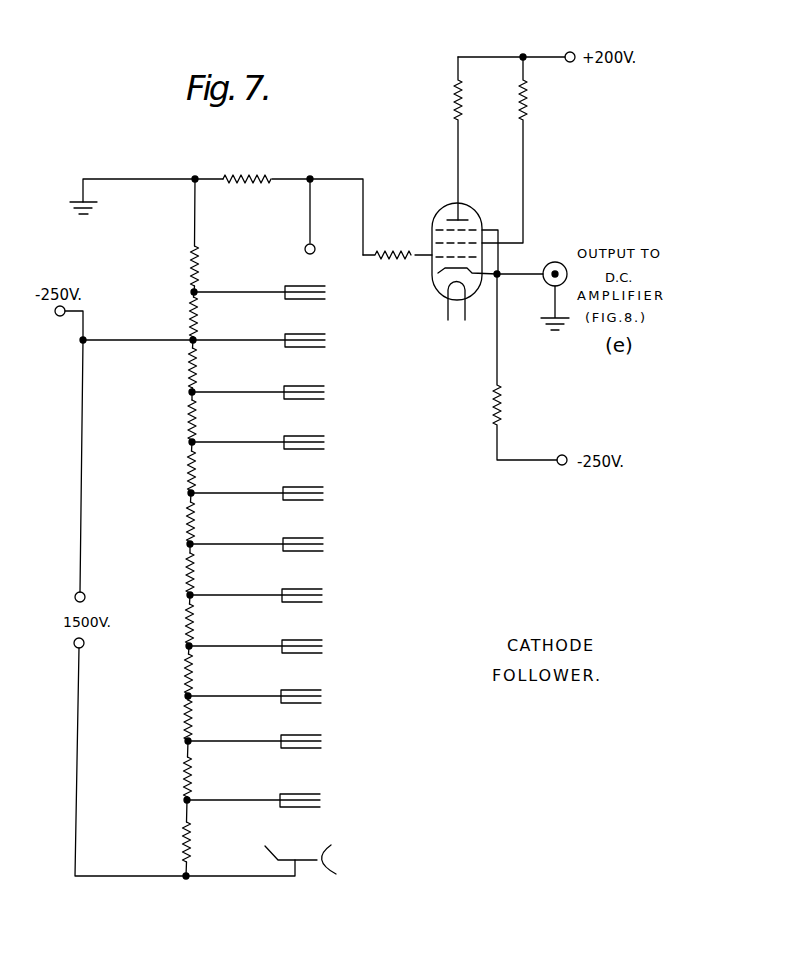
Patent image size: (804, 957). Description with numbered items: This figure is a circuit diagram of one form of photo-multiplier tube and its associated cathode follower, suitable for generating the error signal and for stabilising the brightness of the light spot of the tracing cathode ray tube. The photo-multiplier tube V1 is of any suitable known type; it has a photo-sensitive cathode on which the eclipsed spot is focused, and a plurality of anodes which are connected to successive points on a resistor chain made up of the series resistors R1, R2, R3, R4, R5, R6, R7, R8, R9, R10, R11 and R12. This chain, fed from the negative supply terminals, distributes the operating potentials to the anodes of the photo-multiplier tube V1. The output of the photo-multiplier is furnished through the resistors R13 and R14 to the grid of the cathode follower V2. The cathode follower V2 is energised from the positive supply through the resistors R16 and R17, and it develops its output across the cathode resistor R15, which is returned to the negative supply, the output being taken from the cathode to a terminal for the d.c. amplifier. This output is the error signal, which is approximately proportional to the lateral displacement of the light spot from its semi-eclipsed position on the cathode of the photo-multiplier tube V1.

The resistor R1 is at (181, 267).
The resistor R2 is at (178, 319).
The resistor R3 is at (177, 369).
The resistor R4 is at (177, 420).
The resistor R5 is at (176, 471).
The resistor R6 is at (175, 522).
The resistor R7 is at (176, 573).
The resistor R8 is at (174, 624).
The resistor R9 is at (174, 674).
The resistor R10 is at (172, 720).
The resistor R11 is at (172, 777).
The resistor R12 is at (171, 842).
The resistor R13 is at (247, 165).
The resistor R14 is at (397, 277).
The resistor R15 is at (509, 367).
The resistor R16 is at (441, 138).
The resistor R17 is at (525, 150).
The photo-multiplier tube V1 is at (221, 611).
The cathode follower V2 is at (448, 256).